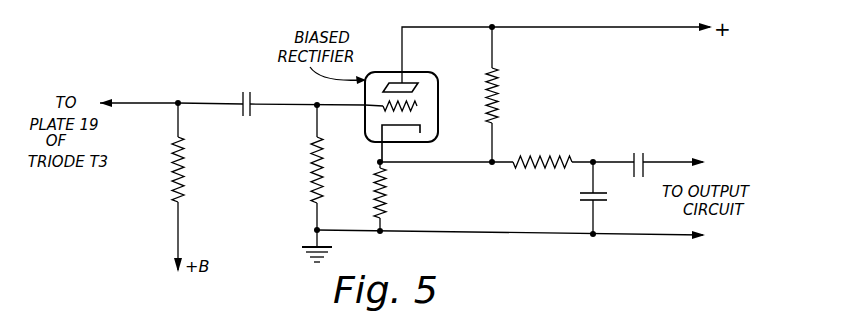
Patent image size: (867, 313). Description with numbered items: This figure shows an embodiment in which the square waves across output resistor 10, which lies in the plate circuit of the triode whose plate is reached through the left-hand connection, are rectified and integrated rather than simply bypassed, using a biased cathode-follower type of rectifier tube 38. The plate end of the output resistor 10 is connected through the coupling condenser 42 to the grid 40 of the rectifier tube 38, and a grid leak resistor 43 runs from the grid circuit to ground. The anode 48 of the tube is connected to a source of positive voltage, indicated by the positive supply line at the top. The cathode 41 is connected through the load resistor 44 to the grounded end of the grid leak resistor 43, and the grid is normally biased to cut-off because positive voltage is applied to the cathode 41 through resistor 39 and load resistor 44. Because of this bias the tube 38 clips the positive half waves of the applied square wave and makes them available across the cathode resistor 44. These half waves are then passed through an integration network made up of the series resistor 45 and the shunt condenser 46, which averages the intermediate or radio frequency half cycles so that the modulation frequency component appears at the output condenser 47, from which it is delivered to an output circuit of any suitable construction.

The output resistor 10 is at (190, 163).
The rectifier tube 38 is at (412, 80).
The resistor 39 is at (500, 95).
The grid 40 is at (417, 106).
The cathode 41 is at (420, 128).
The coupling condenser 42 is at (253, 117).
The grid leak resistor 43 is at (307, 163).
The load resistor 44 is at (390, 186).
The resistor 45 is at (535, 150).
The shunt condenser 46 is at (568, 198).
The output condenser 47 is at (640, 148).
The anode 48 is at (418, 88).